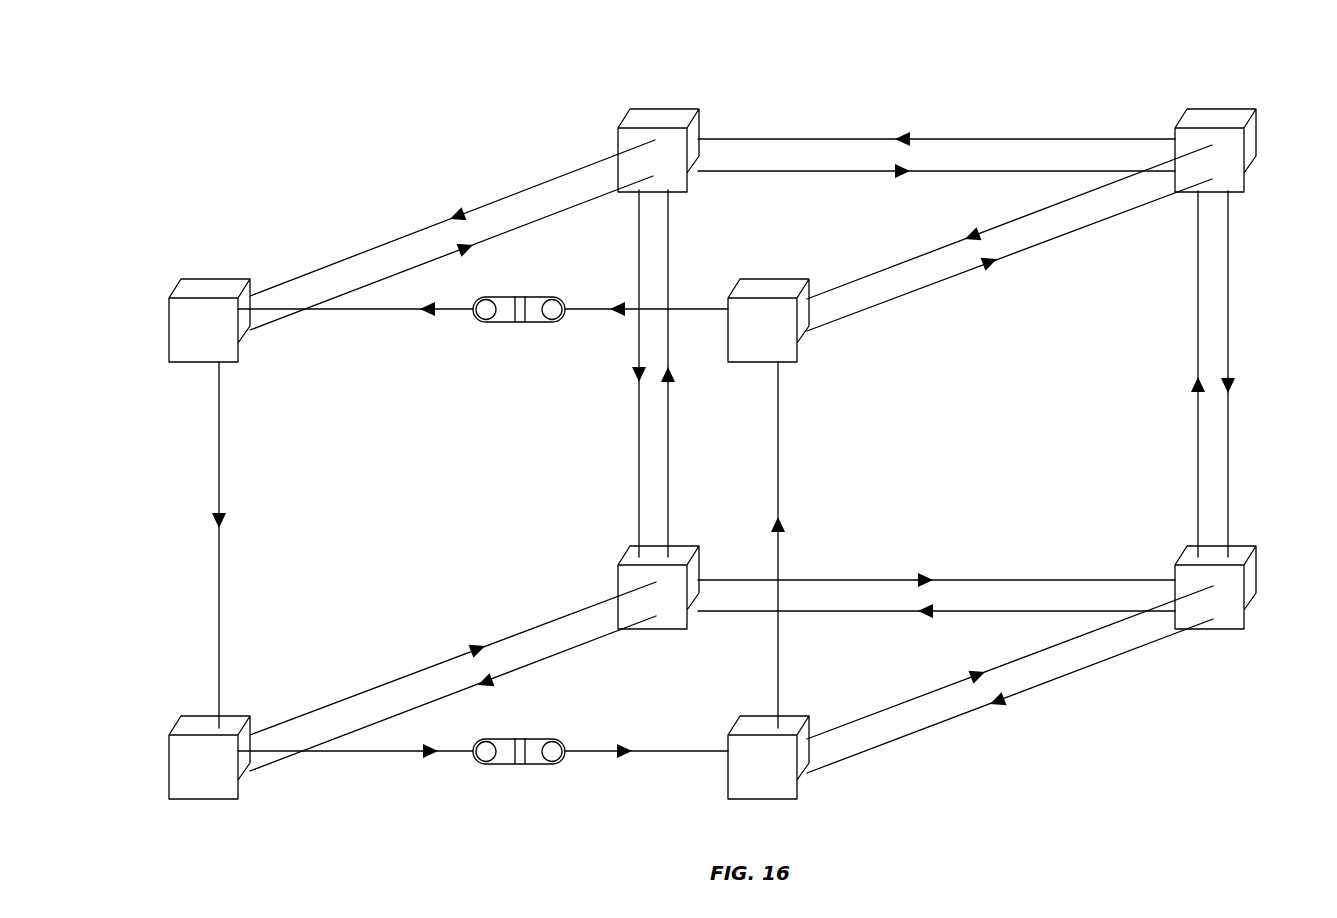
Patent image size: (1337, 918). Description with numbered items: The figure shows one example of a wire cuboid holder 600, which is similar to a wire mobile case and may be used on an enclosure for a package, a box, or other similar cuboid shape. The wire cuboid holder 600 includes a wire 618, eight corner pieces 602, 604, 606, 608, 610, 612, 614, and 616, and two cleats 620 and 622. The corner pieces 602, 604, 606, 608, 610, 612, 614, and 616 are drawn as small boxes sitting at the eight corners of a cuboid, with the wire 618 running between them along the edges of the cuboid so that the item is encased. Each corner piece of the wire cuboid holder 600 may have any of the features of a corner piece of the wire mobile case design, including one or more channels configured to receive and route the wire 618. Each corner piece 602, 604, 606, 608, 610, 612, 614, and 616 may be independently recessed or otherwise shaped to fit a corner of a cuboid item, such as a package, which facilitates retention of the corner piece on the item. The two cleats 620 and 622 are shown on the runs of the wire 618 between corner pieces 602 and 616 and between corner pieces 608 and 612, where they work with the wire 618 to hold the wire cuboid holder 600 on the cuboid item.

The wire cuboid holder 600 is at (243, 100).
The corner piece 602 is at (169, 305).
The corner piece 604 is at (628, 128).
The corner piece 606 is at (618, 565).
The corner piece 608 is at (238, 787).
The corner piece 610 is at (1233, 617).
The corner piece 612 is at (775, 800).
The corner piece 614 is at (1243, 112).
The corner piece 616 is at (803, 346).
The wire 618 is at (403, 310).
The cleat 620 is at (540, 764).
The cleat 622 is at (532, 322).